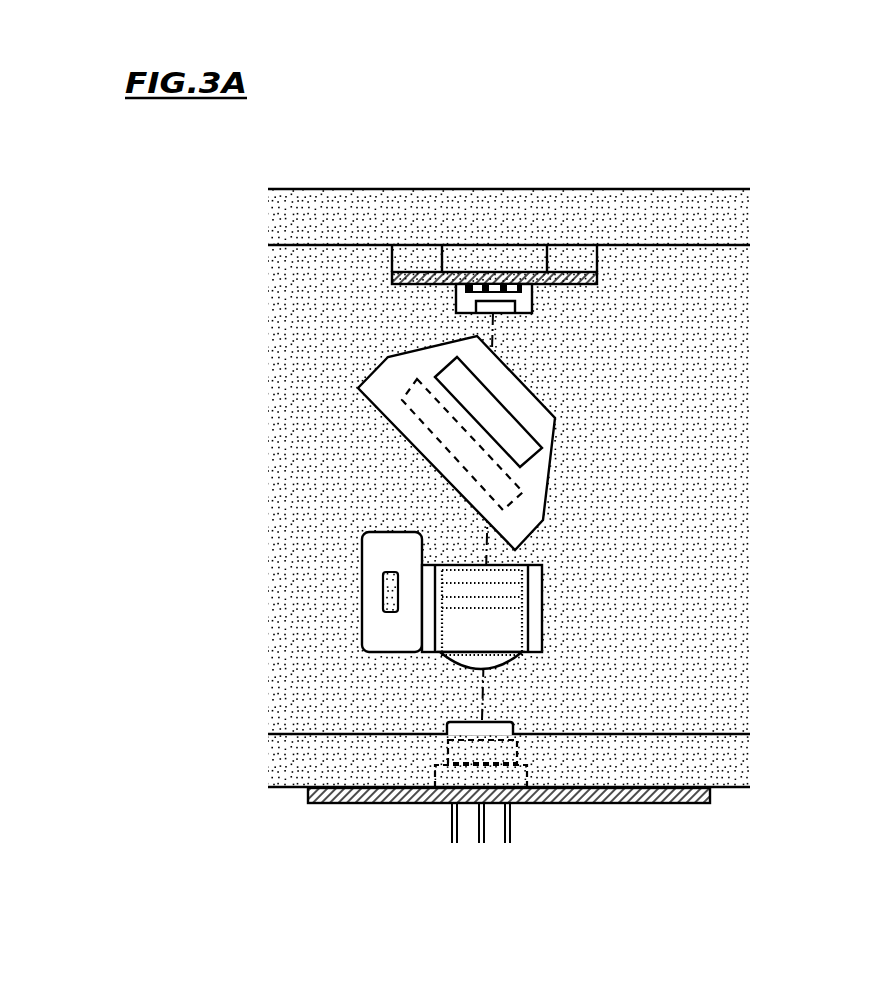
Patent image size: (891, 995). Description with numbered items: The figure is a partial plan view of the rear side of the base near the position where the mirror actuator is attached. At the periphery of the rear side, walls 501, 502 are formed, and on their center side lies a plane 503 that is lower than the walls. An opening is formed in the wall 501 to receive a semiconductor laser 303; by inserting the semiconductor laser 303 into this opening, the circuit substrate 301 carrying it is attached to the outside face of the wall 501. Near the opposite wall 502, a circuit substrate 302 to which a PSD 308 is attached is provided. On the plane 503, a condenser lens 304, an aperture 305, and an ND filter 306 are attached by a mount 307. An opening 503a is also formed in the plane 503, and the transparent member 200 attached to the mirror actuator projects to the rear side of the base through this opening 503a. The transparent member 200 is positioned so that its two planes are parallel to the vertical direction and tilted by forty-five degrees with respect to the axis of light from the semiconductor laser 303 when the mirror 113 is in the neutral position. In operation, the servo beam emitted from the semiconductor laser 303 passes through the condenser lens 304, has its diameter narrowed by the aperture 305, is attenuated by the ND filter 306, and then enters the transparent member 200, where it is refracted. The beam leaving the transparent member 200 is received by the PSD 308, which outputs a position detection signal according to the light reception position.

The wall 502 is at (318, 202).
The plane 503 is at (723, 433).
The wall 501 is at (724, 740).
The circuit substrate 302 is at (572, 272).
The PSD 308 is at (463, 300).
The opening 503a is at (540, 393).
The transparent member 200 is at (450, 375).
The mirror 113 is at (400, 378).
The mount 307 is at (380, 540).
The ND filter 306 is at (510, 567).
The aperture 305 is at (450, 603).
The condenser lens 304 is at (460, 663).
The semiconductor laser 303 is at (493, 845).
The circuit substrate 301 is at (650, 808).